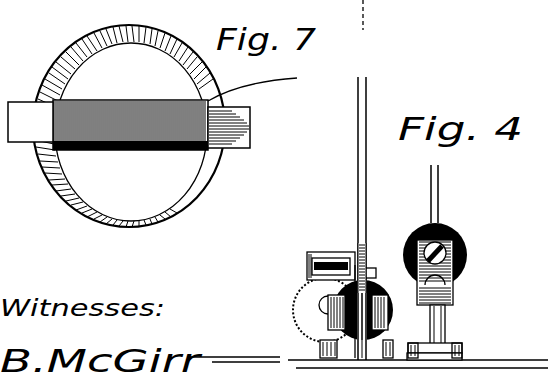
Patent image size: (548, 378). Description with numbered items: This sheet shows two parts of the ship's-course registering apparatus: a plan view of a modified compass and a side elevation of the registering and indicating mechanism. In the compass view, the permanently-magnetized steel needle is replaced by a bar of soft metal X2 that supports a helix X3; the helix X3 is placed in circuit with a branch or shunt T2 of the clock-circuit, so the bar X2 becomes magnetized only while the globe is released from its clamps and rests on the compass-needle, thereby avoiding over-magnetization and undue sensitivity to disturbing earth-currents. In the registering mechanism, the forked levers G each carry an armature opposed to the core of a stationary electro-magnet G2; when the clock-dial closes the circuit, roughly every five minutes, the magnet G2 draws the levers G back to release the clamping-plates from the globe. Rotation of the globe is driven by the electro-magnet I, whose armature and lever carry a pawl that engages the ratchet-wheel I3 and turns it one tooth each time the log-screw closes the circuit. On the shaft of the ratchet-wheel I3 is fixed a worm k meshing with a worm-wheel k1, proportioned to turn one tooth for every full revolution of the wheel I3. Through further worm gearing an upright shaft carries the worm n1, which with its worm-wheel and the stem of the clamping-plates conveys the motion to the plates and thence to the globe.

In FIG. 7, the bar of soft metal X2 is at (254, 127).
In FIG. 7, the helix X3 is at (108, 141).
In FIG. 7, the branch or shunt of the clock-circuit T2 is at (212, 152).
In FIG. 4, the worm n1 is at (370, 218).
In FIG. 4, the worm k is at (312, 280).
In FIG. 4, the worm-wheel k1 is at (331, 278).
In FIG. 4, the electro-magnet I is at (391, 311).
In FIG. 4, the ratchet-wheel I3 is at (387, 287).
In FIG. 4, the forked levers G is at (442, 194).
In FIG. 4, the stationary electro-magnet G2 is at (525, 202).